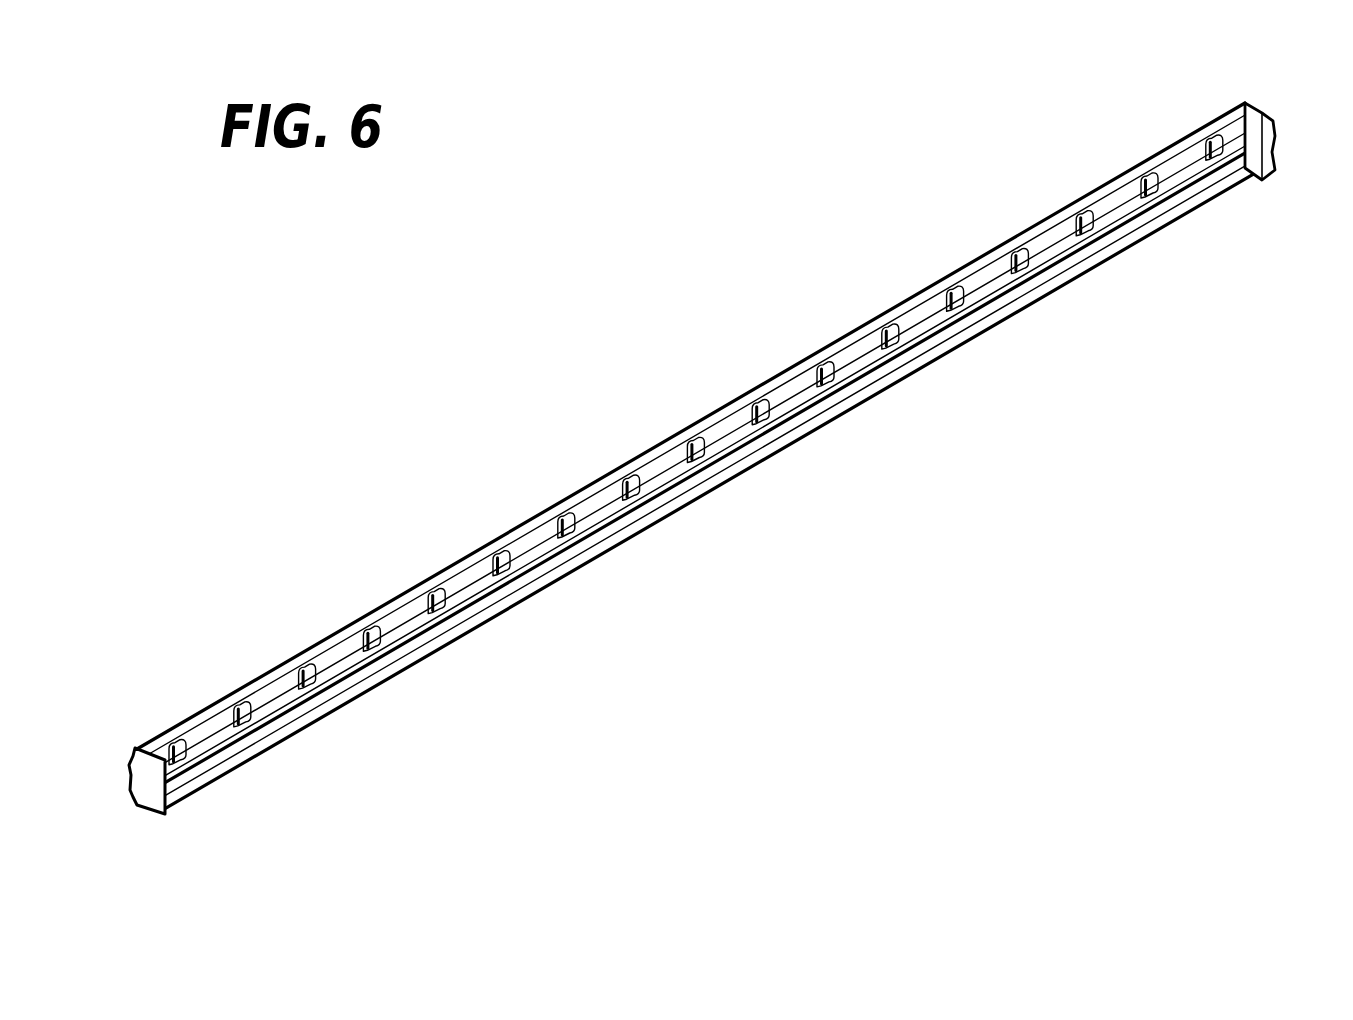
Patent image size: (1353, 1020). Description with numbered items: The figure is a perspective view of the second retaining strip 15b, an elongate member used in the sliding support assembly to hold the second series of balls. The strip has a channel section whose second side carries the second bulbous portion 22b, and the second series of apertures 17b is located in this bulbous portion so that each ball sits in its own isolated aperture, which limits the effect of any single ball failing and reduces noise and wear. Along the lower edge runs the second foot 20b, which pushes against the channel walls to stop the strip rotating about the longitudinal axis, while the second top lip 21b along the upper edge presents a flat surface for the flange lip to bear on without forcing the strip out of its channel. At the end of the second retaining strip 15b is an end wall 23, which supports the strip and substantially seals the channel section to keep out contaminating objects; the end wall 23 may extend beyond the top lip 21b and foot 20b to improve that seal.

The second retaining strip 15b is at (988, 188).
The second top lip 21b is at (654, 435).
The second series of apertures 17b is at (757, 410).
The second bulbous portion 22b is at (608, 519).
The second foot 20b is at (522, 596).
The end wall 23 is at (178, 792).